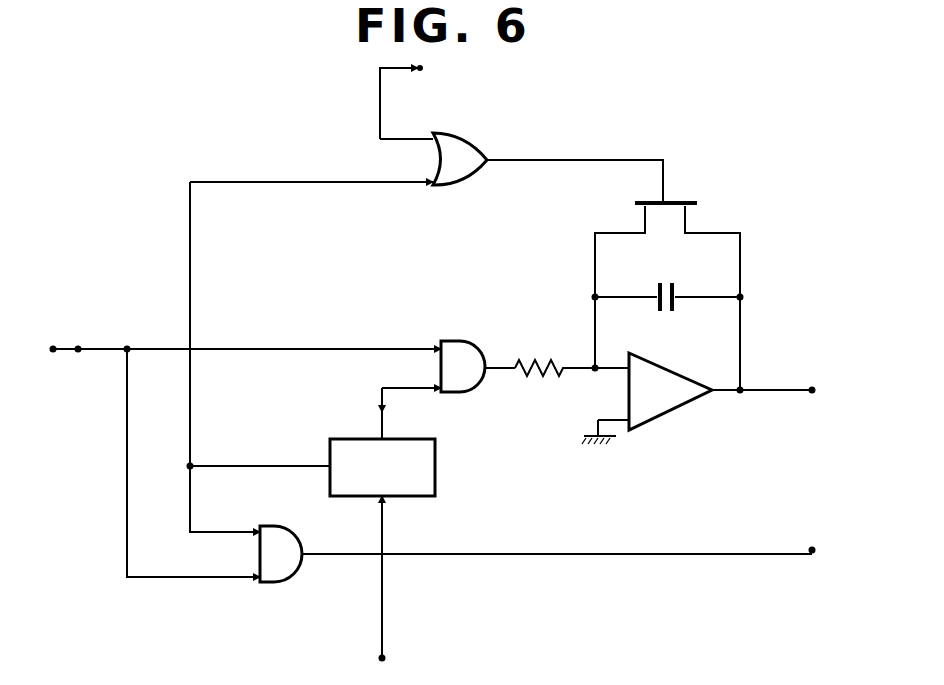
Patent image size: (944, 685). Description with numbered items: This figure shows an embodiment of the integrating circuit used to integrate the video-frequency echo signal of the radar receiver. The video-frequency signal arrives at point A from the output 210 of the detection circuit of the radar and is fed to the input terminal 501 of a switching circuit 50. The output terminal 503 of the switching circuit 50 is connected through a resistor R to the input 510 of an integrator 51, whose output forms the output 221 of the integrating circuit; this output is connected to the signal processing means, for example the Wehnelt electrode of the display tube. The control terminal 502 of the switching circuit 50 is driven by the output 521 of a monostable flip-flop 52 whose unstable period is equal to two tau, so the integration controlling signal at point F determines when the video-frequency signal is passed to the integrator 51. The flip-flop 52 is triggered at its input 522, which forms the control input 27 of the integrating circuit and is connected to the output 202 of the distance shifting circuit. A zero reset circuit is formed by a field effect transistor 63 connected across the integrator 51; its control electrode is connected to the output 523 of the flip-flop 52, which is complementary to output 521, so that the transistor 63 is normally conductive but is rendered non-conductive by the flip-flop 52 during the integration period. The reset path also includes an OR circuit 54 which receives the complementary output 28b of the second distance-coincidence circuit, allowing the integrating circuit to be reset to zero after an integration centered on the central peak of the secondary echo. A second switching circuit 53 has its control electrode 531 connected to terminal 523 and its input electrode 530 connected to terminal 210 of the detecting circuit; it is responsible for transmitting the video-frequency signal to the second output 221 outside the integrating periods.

The complementary output of second distance-coincidence circuit 28b is at (466, 55).
The OR circuit 54 is at (468, 134).
The field effect transistor 63 is at (690, 203).
The switching circuit 50 is at (455, 340).
The input terminal of switching circuit 501 is at (436, 341).
The control terminal of switching circuit 502 is at (436, 386).
The output terminal of switching circuit 503 is at (488, 364).
The resistor R is at (548, 380).
The integrator input 510 is at (629, 368).
The integrator 51 is at (660, 418).
The output of integrating circuit 221 is at (812, 389).
The video-frequency signal point A is at (78, 349).
The output of detection circuit 210 is at (55, 352).
The integration controlling signal point F is at (382, 412).
The monostable flip-flop 52 is at (436, 470).
The output of monostable flip-flop 521 is at (382, 439).
The complementary output of monostable flip-flop 523 is at (330, 464).
The input of monostable flip-flop 522 is at (392, 498).
The switching circuit 53 is at (298, 512).
The control electrode of switching circuit 531 is at (262, 530).
The input electrode of switching circuit 530 is at (262, 576).
The control input of integrating circuit 27 is at (382, 604).
The output of distance shifting circuit 202 is at (384, 658).